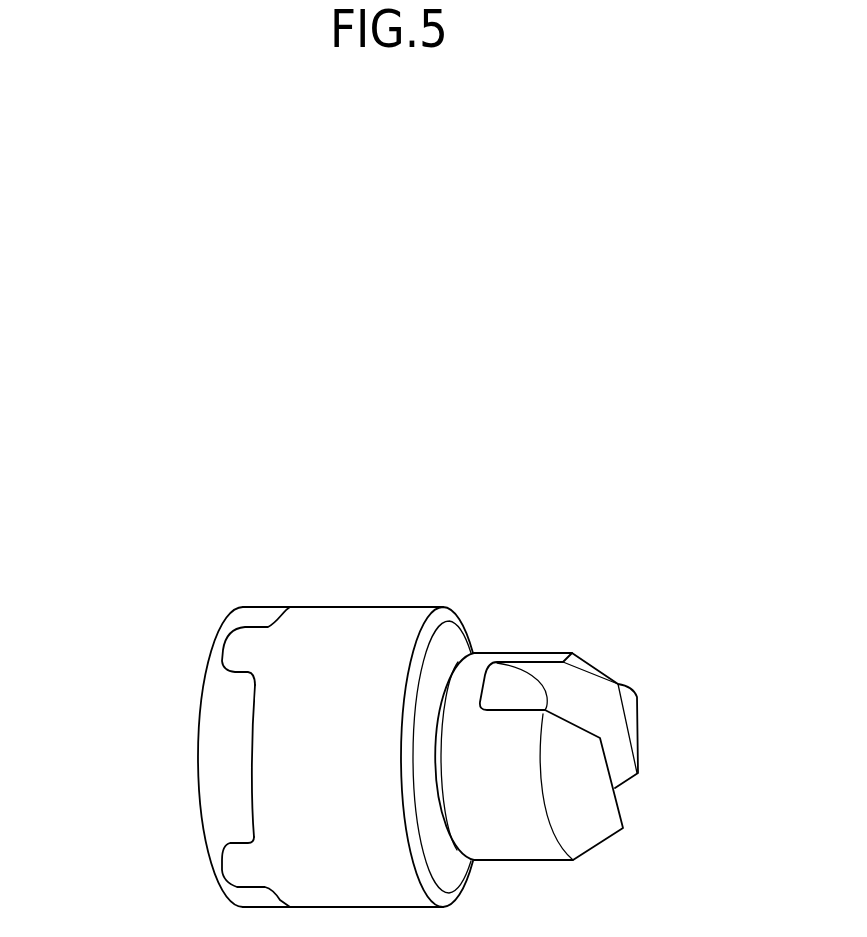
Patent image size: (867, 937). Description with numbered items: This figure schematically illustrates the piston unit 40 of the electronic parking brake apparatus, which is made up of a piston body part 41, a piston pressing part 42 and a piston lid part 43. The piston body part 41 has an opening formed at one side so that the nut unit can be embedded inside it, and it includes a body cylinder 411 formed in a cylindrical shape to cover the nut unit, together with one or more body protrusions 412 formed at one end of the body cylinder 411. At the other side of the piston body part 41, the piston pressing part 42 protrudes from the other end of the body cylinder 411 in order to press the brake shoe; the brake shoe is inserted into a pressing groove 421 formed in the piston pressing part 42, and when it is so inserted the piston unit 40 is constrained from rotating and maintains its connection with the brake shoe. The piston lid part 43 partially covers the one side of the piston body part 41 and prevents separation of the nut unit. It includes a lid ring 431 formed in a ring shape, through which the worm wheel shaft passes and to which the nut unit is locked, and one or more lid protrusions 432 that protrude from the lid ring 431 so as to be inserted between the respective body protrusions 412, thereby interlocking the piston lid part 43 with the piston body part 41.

The piston unit 40 is at (680, 357).
The piston body part 41 is at (365, 468).
The body cylinder 411 is at (345, 633).
The body protrusion 412 is at (252, 638).
The piston pressing part 42 is at (540, 653).
The pressing groove 421 is at (602, 708).
The piston lid part 43 is at (90, 838).
The lid ring 431 is at (274, 847).
The lid protrusion 432 is at (274, 847).